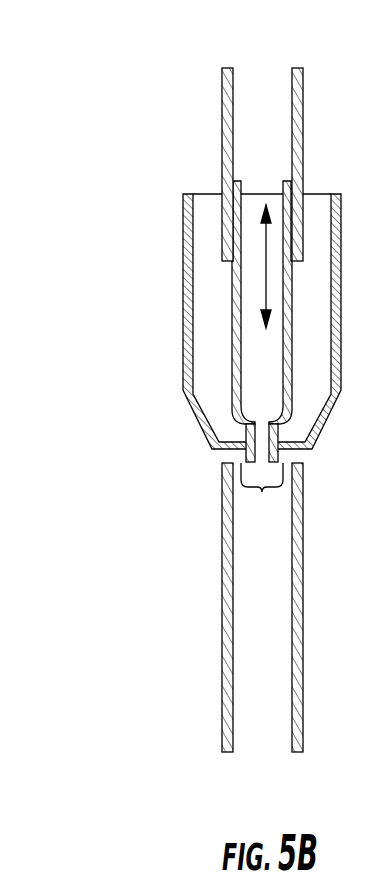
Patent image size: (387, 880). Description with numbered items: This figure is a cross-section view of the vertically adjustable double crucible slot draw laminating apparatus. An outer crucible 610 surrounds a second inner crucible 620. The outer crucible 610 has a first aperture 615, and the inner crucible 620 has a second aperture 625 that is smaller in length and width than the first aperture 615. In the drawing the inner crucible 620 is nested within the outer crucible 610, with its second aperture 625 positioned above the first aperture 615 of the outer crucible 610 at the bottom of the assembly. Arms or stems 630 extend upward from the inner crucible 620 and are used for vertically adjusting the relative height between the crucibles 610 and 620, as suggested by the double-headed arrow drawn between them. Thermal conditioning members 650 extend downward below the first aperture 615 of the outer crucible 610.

The outer crucible 610 is at (183, 220).
The first aperture 615 is at (262, 496).
The inner crucible 620 is at (232, 340).
The second aperture 625 is at (247, 432).
The arms or stems 630 is at (222, 111).
The thermal conditioning members 650 is at (222, 632).